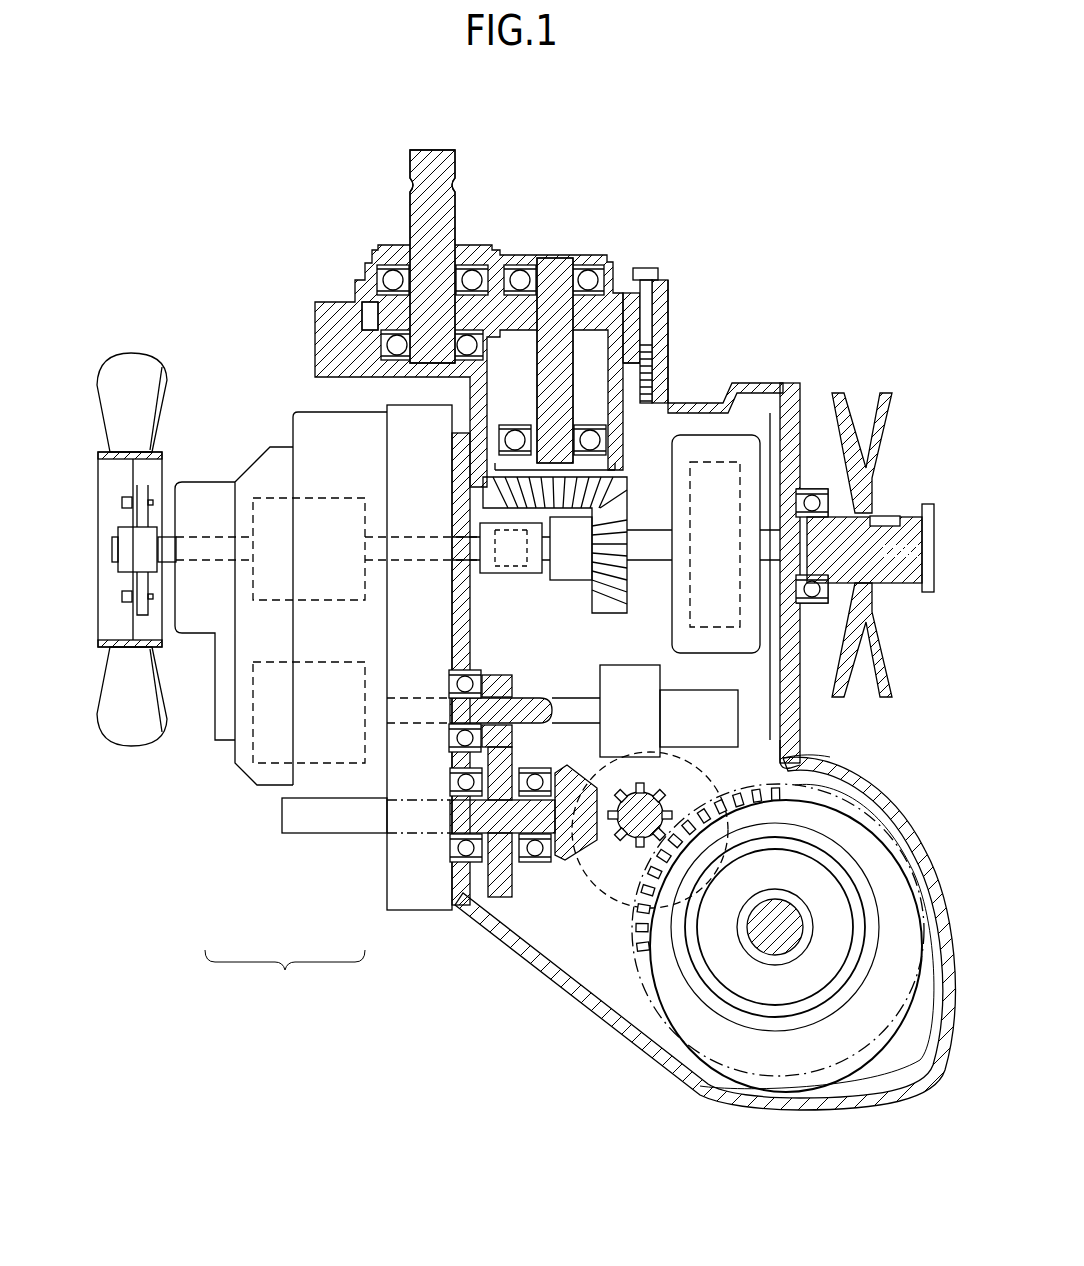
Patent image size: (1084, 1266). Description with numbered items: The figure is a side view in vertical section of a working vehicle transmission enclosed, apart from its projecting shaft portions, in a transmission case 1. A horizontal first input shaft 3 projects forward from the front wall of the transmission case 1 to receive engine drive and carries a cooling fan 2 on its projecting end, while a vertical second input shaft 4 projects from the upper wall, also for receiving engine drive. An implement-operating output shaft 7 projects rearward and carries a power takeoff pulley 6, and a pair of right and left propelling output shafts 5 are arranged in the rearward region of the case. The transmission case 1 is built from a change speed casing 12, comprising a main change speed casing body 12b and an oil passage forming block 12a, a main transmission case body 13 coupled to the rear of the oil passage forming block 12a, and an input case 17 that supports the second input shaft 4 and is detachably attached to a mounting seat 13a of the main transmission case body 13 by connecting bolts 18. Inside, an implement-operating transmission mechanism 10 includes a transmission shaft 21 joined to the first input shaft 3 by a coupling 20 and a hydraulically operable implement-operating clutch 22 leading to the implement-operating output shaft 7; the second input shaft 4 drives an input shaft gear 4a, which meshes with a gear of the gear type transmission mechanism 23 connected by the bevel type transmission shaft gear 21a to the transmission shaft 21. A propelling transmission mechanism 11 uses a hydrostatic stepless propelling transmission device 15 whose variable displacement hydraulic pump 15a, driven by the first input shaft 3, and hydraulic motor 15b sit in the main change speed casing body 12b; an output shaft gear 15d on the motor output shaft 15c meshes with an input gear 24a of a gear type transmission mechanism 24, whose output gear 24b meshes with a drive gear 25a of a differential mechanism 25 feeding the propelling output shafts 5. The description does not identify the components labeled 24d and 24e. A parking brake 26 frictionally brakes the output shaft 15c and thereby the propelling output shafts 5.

The transmission case 1 is at (778, 170).
The cooling fan 2 is at (143, 372).
The first input shaft 3 is at (193, 542).
The second input shaft 4 is at (440, 205).
The input shaft gear 4a is at (365, 316).
The propelling output shafts 5 is at (760, 948).
The power takeoff pulley 6 is at (872, 420).
The implement-operating output shaft 7 is at (912, 527).
The implement-operating transmission mechanism 10 is at (644, 445).
The propelling transmission mechanism 11 is at (563, 960).
The change speed casing 12 is at (285, 977).
The oil passage forming block 12a is at (402, 862).
The main change speed casing body 12b is at (327, 775).
The main transmission case body 13 is at (598, 1020).
The mounting seat 13a is at (662, 380).
The hydrostatic stepless propelling transmission device 15 is at (278, 481).
The variable displacement hydraulic pump 15a is at (313, 500).
The hydraulic motor 15b is at (268, 770).
The output shaft 15c is at (419, 723).
The output shaft gear 15d is at (497, 678).
The input case 17 is at (668, 298).
The connecting bolts 18 is at (648, 266).
The coupling 20 is at (505, 574).
The transmission shaft 21 is at (524, 580).
The transmission shaft gear 21a is at (601, 598).
The implement-operating clutch 22 is at (748, 440).
The gear type transmission mechanism 23 is at (520, 390).
The gear type transmission mechanism 24 is at (547, 746).
The input gear 24a is at (500, 892).
The output gear 24b is at (690, 778).
The bevel pinion 24d is at (580, 850).
The drive sprocket 24e is at (574, 936).
The differential mechanism 25 is at (717, 942).
The drive gear 25a is at (790, 742).
The parking brake 26 is at (742, 732).